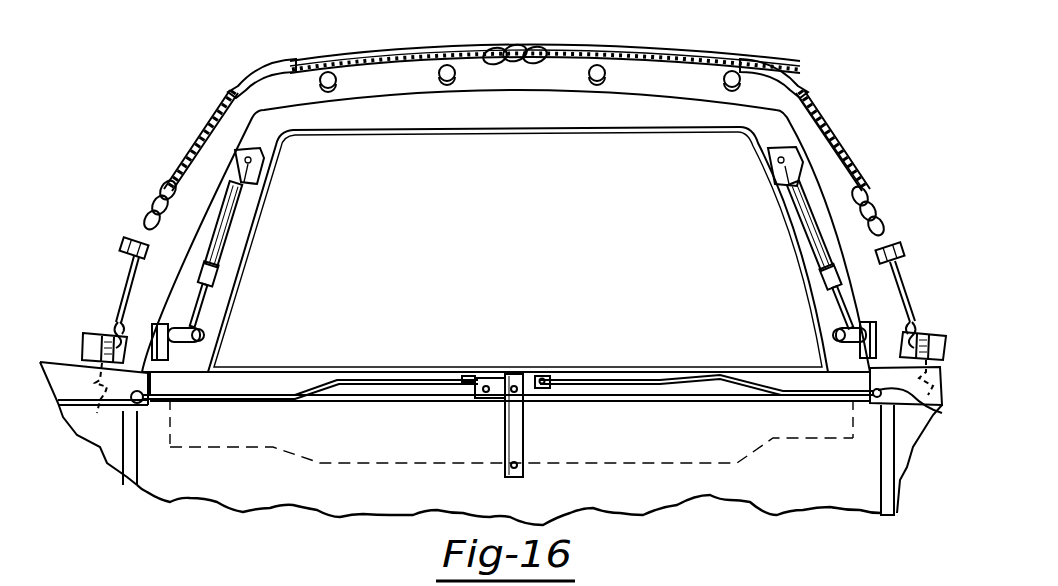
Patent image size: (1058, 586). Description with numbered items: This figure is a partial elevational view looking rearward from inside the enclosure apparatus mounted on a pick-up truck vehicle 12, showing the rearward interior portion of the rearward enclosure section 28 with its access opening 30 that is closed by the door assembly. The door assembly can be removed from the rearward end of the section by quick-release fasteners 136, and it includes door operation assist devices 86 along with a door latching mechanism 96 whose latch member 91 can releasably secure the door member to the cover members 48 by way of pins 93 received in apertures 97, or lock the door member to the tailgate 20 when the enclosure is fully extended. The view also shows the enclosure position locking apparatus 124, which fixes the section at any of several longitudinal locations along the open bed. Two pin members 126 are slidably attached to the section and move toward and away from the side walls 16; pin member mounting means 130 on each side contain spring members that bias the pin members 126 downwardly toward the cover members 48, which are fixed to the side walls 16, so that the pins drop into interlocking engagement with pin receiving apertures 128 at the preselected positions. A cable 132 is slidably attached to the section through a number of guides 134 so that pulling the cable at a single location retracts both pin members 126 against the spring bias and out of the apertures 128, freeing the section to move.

The pick-up truck vehicle 12 is at (128, 480).
The side walls 16 is at (108, 460).
The tailgate 20 is at (381, 453).
The rearward enclosure section 28 is at (838, 170).
The access opening 30 is at (256, 110).
The cover members 48 is at (45, 358).
The door operation assist devices 86 is at (226, 233).
The latch member 91 is at (517, 437).
The pins 93 is at (172, 443).
The door latching mechanism 96 is at (428, 370).
The apertures 97 is at (110, 432).
The enclosure position locking apparatus 124 is at (147, 192).
The pin members 126 is at (110, 327).
The pin receiving apertures 128 is at (88, 425).
The pin member mounting means 130 is at (130, 325).
The cable 132 is at (203, 133).
The guides 134 is at (297, 14).
The quick-release fasteners 136 is at (333, 72).